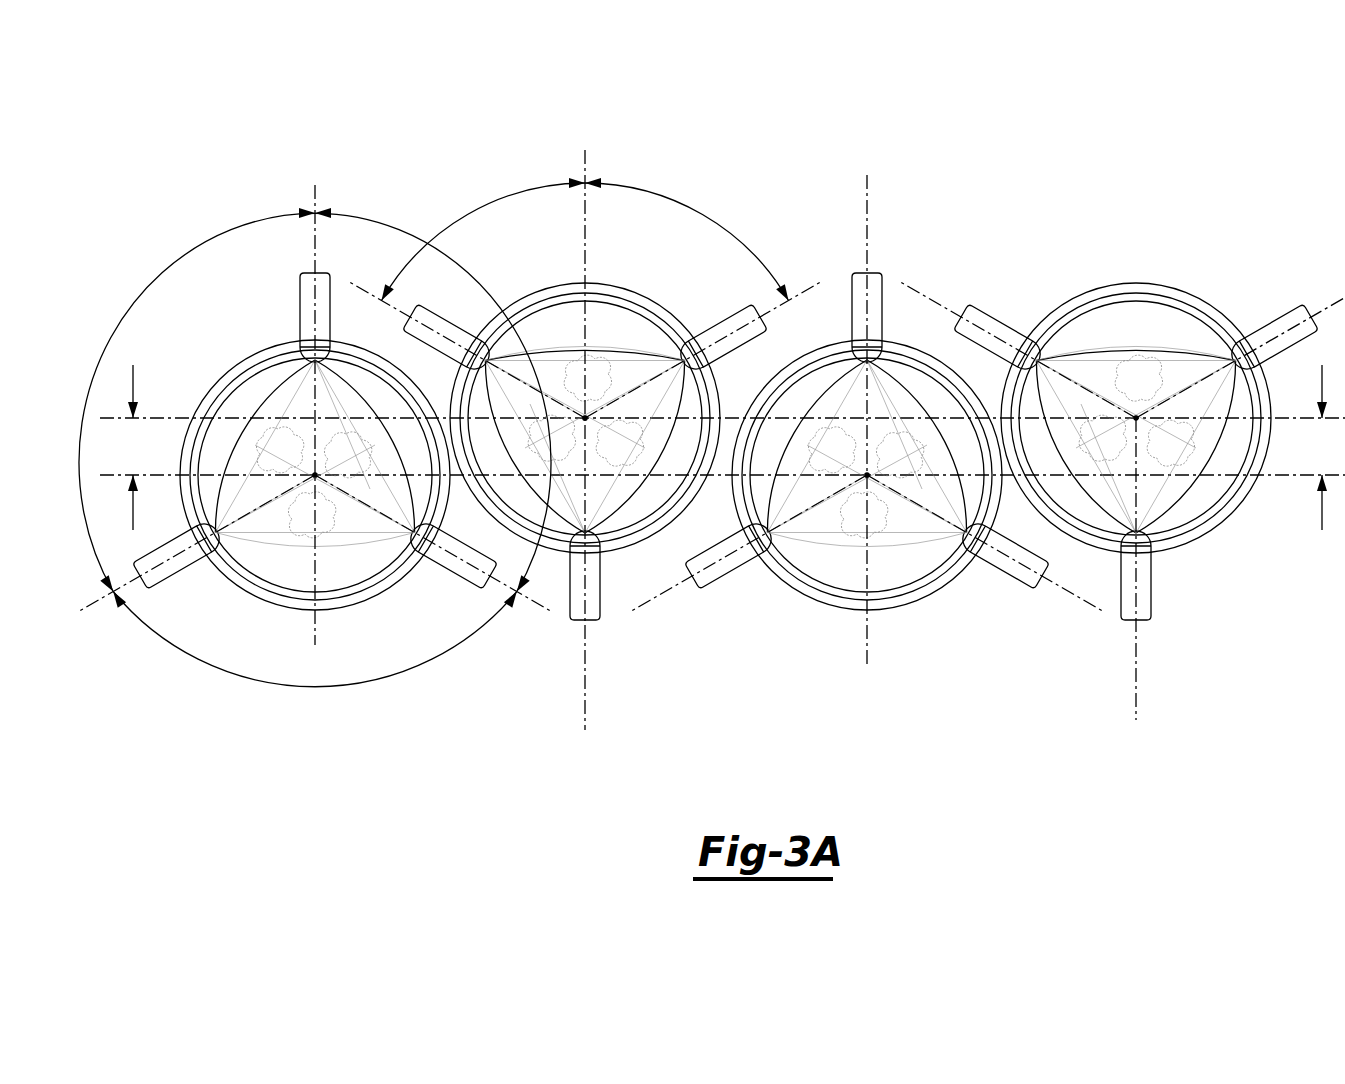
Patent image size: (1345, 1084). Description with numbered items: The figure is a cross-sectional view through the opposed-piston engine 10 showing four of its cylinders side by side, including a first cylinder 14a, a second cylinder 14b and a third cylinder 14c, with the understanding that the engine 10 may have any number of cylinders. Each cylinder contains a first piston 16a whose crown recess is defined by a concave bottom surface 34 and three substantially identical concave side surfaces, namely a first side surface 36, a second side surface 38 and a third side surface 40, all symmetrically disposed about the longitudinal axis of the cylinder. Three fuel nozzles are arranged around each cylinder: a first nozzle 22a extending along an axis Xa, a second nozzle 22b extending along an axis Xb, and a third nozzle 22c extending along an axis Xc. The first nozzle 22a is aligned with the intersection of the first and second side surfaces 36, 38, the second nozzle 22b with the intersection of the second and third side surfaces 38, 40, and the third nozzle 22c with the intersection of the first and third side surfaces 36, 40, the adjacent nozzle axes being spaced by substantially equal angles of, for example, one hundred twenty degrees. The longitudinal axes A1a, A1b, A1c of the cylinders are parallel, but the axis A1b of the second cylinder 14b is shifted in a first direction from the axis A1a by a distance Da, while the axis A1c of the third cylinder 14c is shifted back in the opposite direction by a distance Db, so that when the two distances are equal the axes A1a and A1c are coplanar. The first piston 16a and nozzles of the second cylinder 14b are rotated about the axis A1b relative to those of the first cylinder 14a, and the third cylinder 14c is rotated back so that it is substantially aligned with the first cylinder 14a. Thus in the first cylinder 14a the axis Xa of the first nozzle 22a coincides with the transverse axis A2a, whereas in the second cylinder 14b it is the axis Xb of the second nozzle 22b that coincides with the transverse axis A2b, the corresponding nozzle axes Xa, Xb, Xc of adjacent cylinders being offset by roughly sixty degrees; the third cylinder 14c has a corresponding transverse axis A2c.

The engine 10 is at (195, 150).
The first cylinder 14a is at (227, 380).
The second cylinder 14b is at (622, 292).
The third cylinder 14c is at (907, 343).
The first piston 16a is at (263, 393).
The first nozzle 22a is at (303, 283).
The second nozzle 22b is at (458, 577).
The third nozzle 22c is at (172, 578).
The bottom surface 34 is at (275, 532).
The first side surface 36 is at (239, 454).
The second side surface 38 is at (389, 416).
The third side surface 40 is at (305, 579).
The longitudinal axis of the first cylinder A1a is at (315, 475).
The longitudinal axis of the second cylinder A1b is at (585, 418).
The longitudinal axis of the third cylinder A1c is at (882, 562).
The transverse axis of the first cylinder A2a is at (312, 627).
The transverse axis of the second cylinder A2b is at (580, 153).
The transverse axis of the third cylinder A2c is at (864, 676).
The axis of the first nozzle Xa is at (313, 190).
The axis of the second nozzle Xb is at (537, 608).
The axis of the third nozzle Xc is at (98, 608).
The distance Da is at (722, 447).
The distance Db is at (1316, 447).